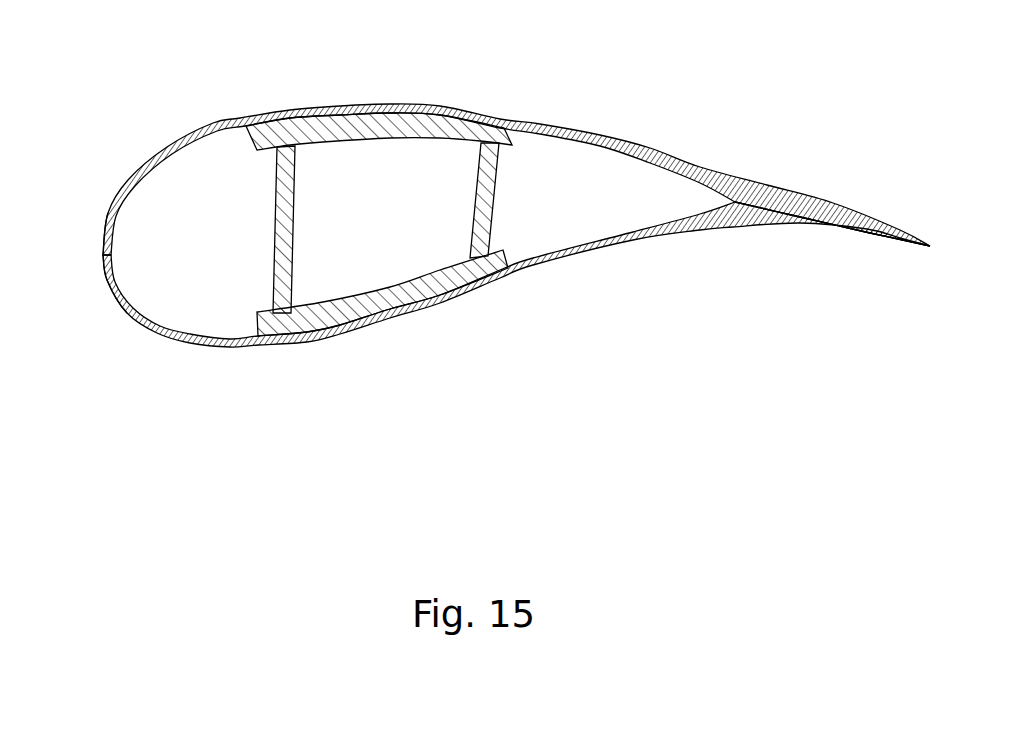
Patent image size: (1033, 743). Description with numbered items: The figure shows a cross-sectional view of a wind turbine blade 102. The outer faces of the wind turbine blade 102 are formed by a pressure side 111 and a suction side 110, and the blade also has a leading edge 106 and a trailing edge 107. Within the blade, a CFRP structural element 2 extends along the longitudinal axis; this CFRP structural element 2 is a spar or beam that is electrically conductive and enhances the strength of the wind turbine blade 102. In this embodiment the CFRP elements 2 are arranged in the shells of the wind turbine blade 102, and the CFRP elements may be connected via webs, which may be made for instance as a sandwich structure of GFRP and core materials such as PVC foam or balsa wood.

The wind turbine blade 102 is at (488, 200).
The suction side 110 is at (385, 106).
The pressure side 111 is at (390, 320).
The leading edge 106 is at (103, 270).
The trailing edge 107 is at (930, 246).
The CFRP structural element 2 is at (328, 128).